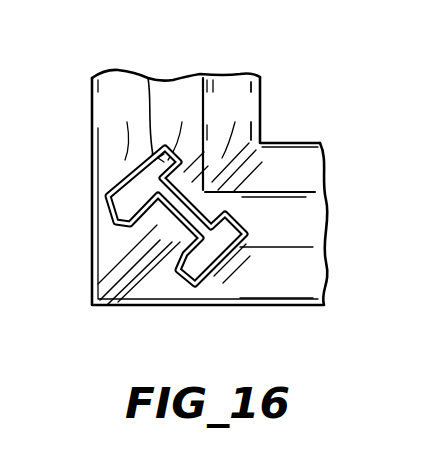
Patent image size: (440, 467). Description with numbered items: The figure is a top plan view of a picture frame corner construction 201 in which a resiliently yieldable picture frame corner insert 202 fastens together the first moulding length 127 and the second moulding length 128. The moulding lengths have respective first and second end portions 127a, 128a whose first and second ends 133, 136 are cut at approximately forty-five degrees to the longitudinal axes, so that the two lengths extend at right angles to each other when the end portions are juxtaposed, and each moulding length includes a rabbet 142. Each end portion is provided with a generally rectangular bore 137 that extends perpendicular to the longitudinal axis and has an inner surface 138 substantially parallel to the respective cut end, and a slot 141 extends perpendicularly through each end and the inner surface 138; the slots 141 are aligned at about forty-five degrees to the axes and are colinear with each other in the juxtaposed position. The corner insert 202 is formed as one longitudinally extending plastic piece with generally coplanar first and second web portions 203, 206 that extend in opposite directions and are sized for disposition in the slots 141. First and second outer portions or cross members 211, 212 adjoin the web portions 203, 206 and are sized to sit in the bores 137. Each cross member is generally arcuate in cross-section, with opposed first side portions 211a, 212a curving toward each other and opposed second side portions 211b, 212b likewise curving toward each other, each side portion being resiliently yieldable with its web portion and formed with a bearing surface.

The picture frame corner construction 201 is at (318, 88).
The second moulding length 128 is at (191, 75).
The second end portion 128a is at (92, 94).
The second outer portion or cross member 212 is at (148, 78).
The first side portion of second cross member 212a is at (177, 129).
The second side portion of second cross member 212b is at (127, 122).
The second web portion 206 is at (223, 134).
The rabbet 142 is at (238, 82).
The second end 136 is at (256, 148).
The first web portion 203 is at (228, 184).
The first moulding length 127 is at (327, 200).
The first end portion 127a is at (308, 306).
The first outer portion or cross member 211 is at (325, 252).
The first side portion of first cross member 211a is at (247, 232).
The second side portion of first cross member 211b is at (223, 267).
The bore 137 is at (110, 182).
The inner surface 138 is at (114, 200).
The slot 141 is at (115, 257).
The first end 133 is at (92, 295).
The picture frame corner insert 202 is at (173, 243).